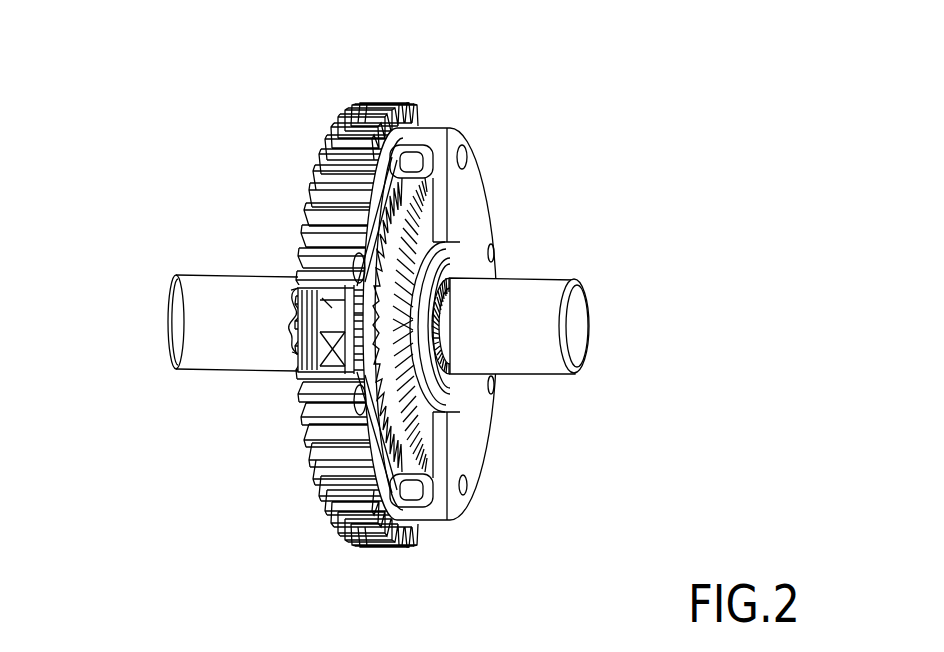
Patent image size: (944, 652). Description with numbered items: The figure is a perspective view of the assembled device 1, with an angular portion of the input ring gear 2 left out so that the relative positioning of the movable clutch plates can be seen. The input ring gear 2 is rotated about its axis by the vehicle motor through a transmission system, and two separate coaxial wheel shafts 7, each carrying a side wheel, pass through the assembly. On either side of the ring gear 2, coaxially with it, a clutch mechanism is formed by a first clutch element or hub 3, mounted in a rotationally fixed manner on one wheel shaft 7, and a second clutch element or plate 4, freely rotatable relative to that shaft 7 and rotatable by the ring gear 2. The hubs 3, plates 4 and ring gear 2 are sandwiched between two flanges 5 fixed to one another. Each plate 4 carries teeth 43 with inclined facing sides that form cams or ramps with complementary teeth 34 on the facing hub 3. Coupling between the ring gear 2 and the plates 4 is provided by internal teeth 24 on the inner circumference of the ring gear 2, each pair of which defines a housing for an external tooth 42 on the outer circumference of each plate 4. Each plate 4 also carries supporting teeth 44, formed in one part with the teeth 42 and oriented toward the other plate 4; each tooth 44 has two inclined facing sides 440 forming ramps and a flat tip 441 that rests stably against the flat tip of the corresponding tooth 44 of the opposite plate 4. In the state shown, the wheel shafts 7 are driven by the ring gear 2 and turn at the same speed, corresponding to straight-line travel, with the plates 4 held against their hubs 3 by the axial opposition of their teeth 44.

The device 1 is at (597, 107).
The input ring gear 2 is at (383, 107).
The first clutch element (clutch hub) 3 is at (290, 307).
The second clutch element (clutch plate) 4 is at (420, 493).
The flange 5 is at (455, 440).
The wheel shaft 7 is at (195, 333).
The internal teeth 24 is at (362, 293).
The teeth of the hub 34 is at (300, 326).
The external teeth 42 is at (318, 342).
The teeth of the plate 43 is at (300, 293).
The teeth (supporting contact means) 44 is at (324, 349).
The inclined facing sides 440 is at (336, 353).
The tip 441 is at (352, 358).